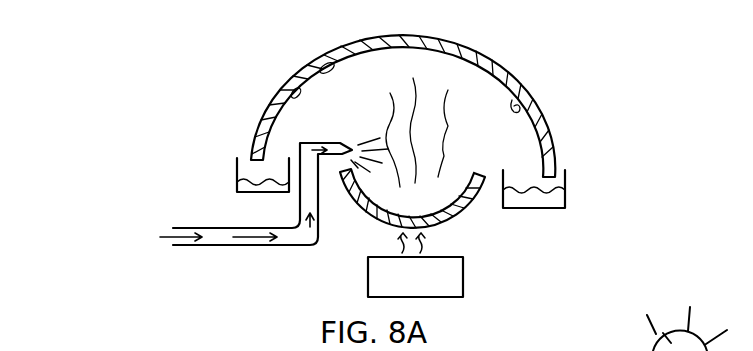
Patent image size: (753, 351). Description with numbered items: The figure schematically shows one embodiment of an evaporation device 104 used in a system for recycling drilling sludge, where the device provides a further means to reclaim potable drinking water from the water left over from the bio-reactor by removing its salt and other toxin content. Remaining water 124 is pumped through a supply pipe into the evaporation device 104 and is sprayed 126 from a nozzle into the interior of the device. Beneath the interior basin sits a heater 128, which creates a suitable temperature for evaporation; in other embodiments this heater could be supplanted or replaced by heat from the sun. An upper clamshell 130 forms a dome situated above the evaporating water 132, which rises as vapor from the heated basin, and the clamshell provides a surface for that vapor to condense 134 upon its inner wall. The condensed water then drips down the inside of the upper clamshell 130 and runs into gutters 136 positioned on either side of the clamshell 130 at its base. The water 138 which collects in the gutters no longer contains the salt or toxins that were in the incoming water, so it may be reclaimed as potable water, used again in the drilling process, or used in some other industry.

The evaporation device 104 is at (623, 63).
The remaining water 124 is at (250, 240).
The spray 126 is at (366, 128).
The heater 128 is at (463, 281).
The upper clamshell 130 is at (452, 53).
The evaporating water 132 is at (440, 137).
The condensed water 134 is at (490, 79).
The gutters 136 is at (237, 182).
The collected water 138 is at (273, 180).